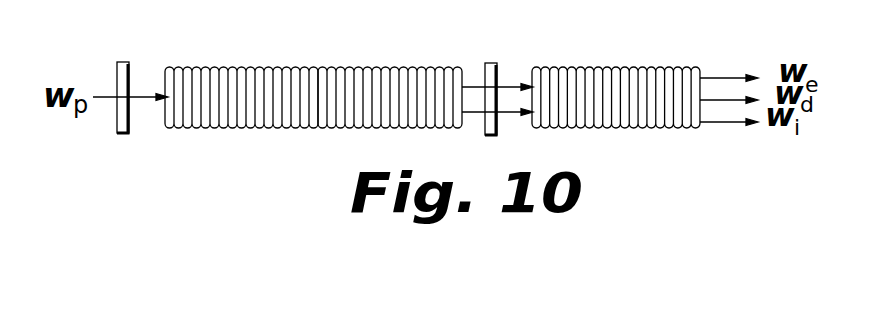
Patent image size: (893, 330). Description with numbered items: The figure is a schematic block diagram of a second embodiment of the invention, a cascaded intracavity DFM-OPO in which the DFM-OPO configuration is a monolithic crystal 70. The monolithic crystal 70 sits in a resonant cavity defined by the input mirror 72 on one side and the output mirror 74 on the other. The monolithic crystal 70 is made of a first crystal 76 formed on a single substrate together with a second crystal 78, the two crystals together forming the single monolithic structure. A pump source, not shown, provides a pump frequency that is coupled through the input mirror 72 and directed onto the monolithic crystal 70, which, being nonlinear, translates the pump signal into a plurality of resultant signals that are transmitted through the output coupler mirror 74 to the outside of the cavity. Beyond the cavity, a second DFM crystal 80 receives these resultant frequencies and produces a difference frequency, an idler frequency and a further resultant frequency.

The monolithic crystal 70 is at (313, 101).
The input mirror 72 is at (127, 61).
The output mirror 74 is at (484, 62).
The first crystal 76 is at (230, 66).
The second crystal 78 is at (407, 64).
The second DFM crystal 80 is at (622, 71).